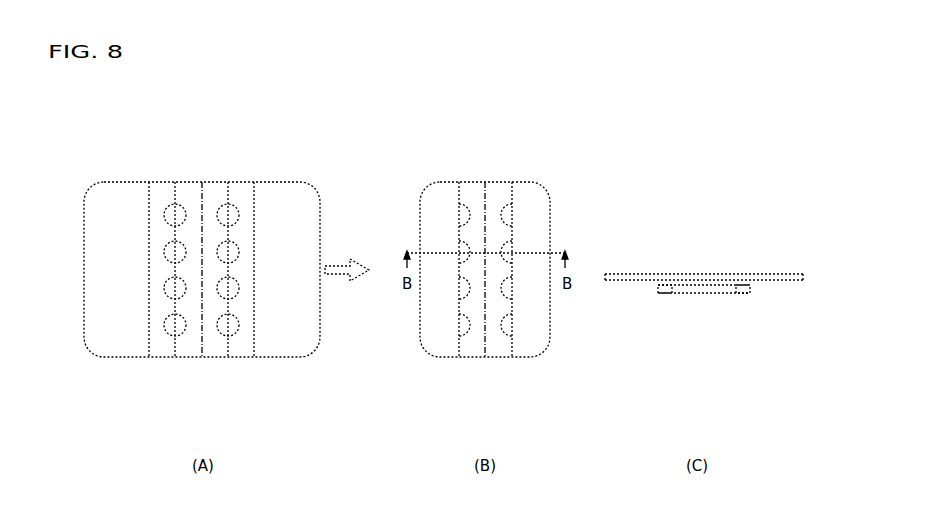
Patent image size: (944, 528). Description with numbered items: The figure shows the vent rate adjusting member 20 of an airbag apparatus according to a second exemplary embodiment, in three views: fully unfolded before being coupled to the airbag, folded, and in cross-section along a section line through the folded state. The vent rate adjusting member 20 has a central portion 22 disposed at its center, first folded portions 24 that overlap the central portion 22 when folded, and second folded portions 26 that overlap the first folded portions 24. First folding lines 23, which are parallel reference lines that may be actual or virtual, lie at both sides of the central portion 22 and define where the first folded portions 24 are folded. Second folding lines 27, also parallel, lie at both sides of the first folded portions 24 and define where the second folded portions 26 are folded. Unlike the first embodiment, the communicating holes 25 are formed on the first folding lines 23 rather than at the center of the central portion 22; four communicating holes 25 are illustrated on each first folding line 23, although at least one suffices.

The vent rate adjusting member 20 is at (311, 170).
The central portion 22 is at (205, 357).
The first folding line 23 is at (175, 357).
The first folded portion 24 is at (158, 195).
The communicating hole 25 is at (227, 212).
The second folded portion 26 is at (115, 183).
The second folding line 27 is at (148, 357).